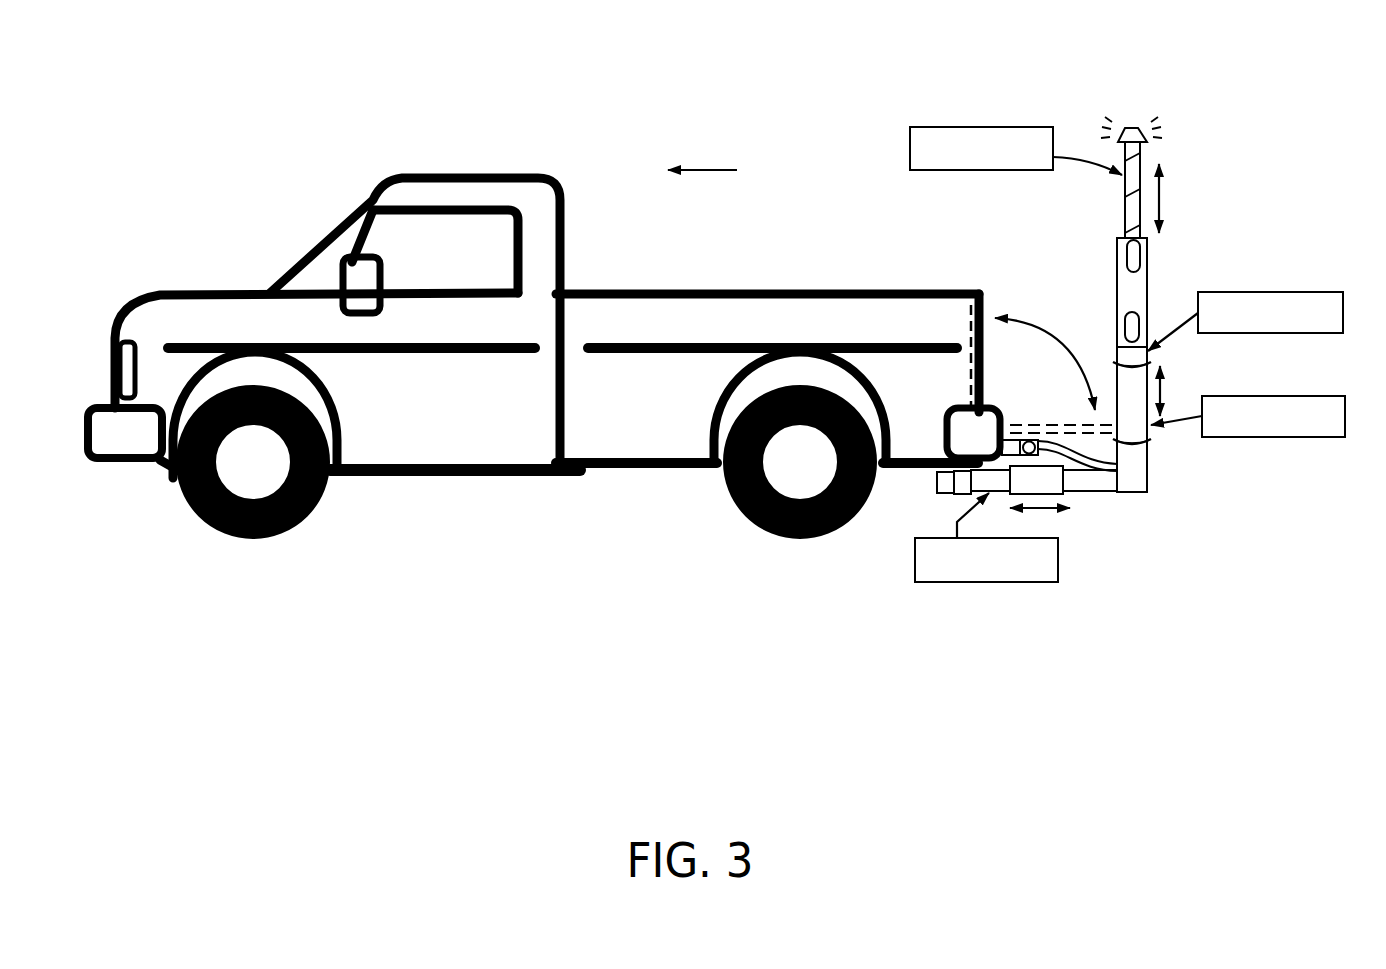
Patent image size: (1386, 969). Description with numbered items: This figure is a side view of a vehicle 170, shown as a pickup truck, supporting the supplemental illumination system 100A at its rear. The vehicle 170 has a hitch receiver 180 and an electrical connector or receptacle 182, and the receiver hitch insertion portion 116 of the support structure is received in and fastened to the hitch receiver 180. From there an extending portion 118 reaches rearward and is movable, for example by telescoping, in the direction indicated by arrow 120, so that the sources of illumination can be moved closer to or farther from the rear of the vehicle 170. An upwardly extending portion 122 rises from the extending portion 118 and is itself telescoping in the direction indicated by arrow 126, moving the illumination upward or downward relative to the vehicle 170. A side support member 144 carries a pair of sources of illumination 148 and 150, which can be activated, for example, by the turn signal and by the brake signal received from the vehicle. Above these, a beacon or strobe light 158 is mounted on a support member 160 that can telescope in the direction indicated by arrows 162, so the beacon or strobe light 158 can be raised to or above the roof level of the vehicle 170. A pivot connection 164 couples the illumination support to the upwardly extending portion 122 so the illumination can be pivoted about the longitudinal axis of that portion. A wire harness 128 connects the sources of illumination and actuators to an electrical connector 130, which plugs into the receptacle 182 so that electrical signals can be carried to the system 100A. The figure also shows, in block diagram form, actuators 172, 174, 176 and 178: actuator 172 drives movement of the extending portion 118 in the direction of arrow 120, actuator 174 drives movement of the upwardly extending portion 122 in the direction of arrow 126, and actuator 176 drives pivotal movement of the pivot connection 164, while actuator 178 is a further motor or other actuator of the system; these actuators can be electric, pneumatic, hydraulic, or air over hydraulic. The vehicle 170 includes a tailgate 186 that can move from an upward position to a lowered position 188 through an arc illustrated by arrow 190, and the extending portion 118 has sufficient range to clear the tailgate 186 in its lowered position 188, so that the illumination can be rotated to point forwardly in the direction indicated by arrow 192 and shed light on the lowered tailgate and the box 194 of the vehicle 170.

The supplemental illumination system 100A is at (1077, 57).
The receiver hitch insertion portion 116 is at (978, 480).
The extending portion 118 is at (1093, 492).
The arrow 120 is at (1043, 510).
The upwardly extending portion 122 is at (1148, 432).
The arrow 126 is at (1160, 388).
The wire harness 128 is at (1072, 462).
The electrical connector 130 is at (1038, 452).
The side support member 144 is at (1135, 287).
The source of illumination 148 is at (1133, 262).
The source of illumination 150 is at (1120, 305).
The beacon or strobe light 158 is at (1132, 131).
The support member 160 is at (1141, 165).
The arrows 162 is at (1160, 200).
The pivot connection 164 is at (1113, 367).
The vehicle 170 is at (477, 172).
The actuator 172 is at (960, 582).
The actuator 174 is at (1265, 437).
The actuator 176 is at (1285, 292).
The actuator 178 is at (943, 170).
The hitch receiver 180 is at (937, 482).
The electrical connector (receptacle) 182 is at (993, 445).
The tailgate 186 is at (983, 306).
The lowered position 188 is at (1073, 424).
The arrow 190 is at (1062, 346).
The arrow 192 is at (693, 168).
The box 194 is at (601, 287).